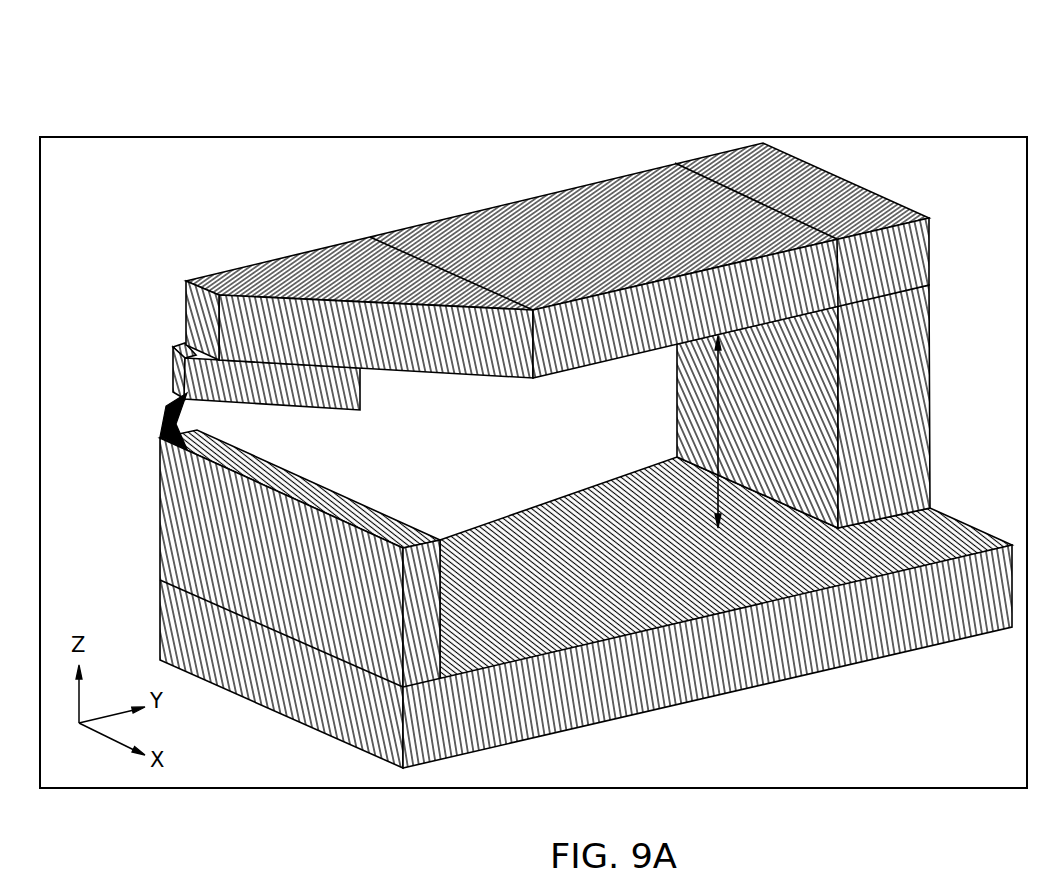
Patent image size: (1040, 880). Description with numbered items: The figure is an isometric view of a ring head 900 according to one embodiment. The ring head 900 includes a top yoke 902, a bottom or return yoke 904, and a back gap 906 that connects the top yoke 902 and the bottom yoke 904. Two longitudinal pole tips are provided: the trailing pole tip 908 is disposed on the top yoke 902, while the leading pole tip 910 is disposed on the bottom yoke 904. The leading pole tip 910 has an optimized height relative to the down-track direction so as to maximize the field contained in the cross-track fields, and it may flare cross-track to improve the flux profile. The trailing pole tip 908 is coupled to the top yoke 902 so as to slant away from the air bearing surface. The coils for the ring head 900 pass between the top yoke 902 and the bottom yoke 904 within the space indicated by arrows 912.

The ring head 900 is at (214, 86).
The top yoke 902 is at (598, 268).
The bottom yoke 904 is at (605, 582).
The back gap 906 is at (906, 432).
The trailing pole tip 908 is at (167, 402).
The leading pole tip 910 is at (162, 433).
The arrows 912 is at (780, 413).